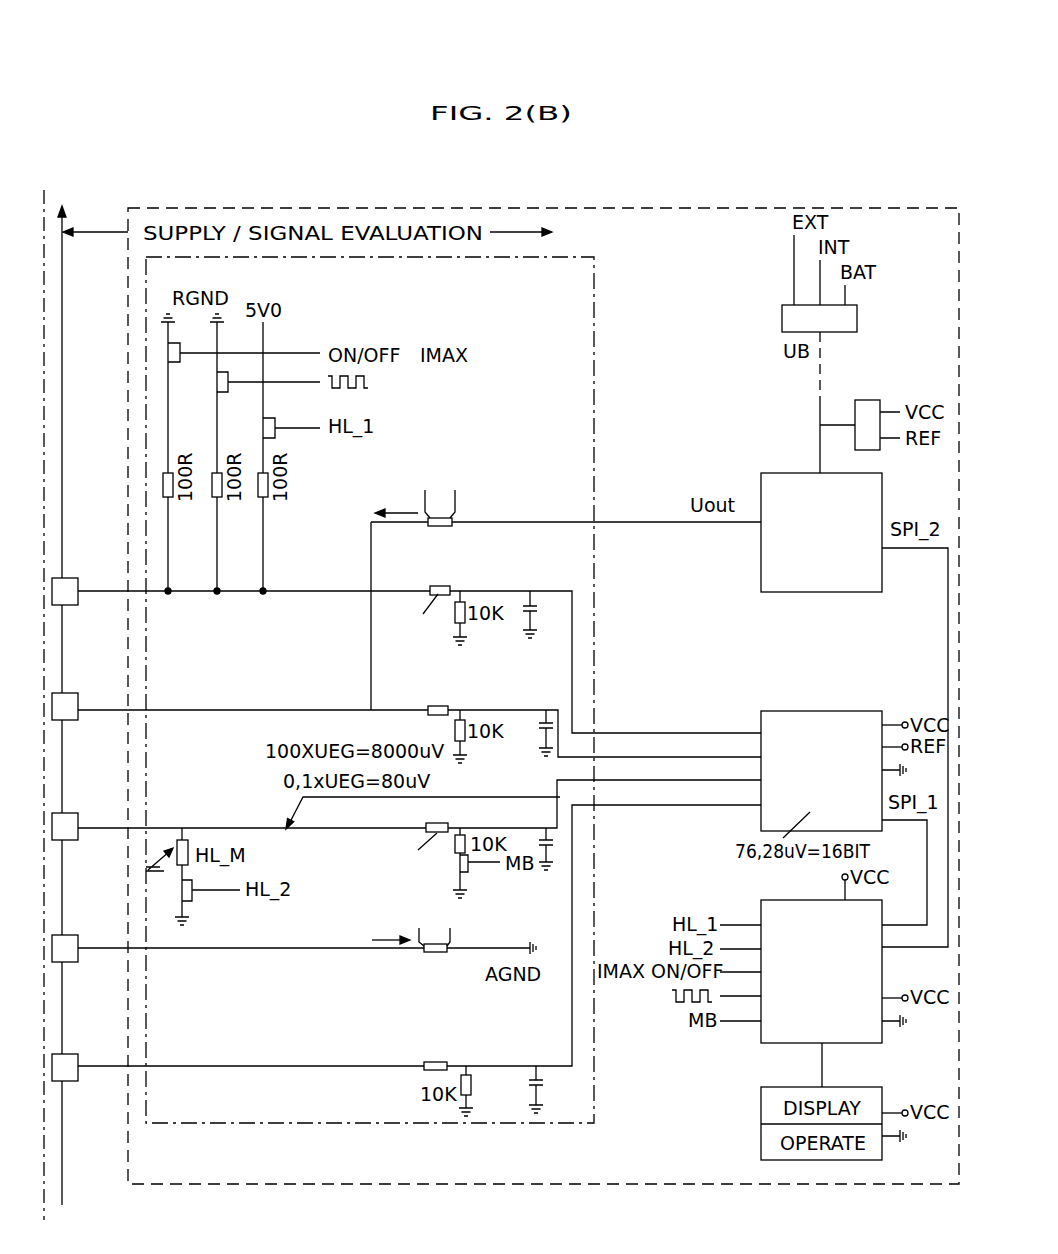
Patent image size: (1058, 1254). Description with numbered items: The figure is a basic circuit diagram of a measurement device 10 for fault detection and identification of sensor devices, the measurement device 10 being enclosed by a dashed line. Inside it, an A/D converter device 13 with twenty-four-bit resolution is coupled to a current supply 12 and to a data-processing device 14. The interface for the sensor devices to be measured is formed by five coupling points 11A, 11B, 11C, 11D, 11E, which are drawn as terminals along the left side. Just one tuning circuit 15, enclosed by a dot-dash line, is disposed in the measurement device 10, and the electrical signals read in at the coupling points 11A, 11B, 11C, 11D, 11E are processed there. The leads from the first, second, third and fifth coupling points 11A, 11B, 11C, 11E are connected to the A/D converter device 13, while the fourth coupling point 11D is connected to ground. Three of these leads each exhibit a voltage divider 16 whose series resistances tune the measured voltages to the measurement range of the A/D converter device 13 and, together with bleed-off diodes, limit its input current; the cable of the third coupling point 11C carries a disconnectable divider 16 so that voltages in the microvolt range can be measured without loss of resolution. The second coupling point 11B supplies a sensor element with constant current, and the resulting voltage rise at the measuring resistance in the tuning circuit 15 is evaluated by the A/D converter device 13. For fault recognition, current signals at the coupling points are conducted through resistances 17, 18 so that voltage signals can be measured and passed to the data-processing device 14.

The measurement device 10 is at (128, 1170).
The first coupling point 11A is at (72, 605).
The second coupling point 11B is at (72, 720).
The third coupling point 11C is at (72, 840).
The fourth coupling point 11D is at (72, 962).
The fifth coupling point 11E is at (72, 1080).
The current supply 12 is at (868, 500).
The A/D converter device 13 is at (855, 720).
The data-processing device 14 is at (863, 982).
The tuning circuit 15 is at (594, 381).
The voltage divider 16 is at (453, 578).
The resistance 17 is at (463, 503).
The resistance 18 is at (458, 931).